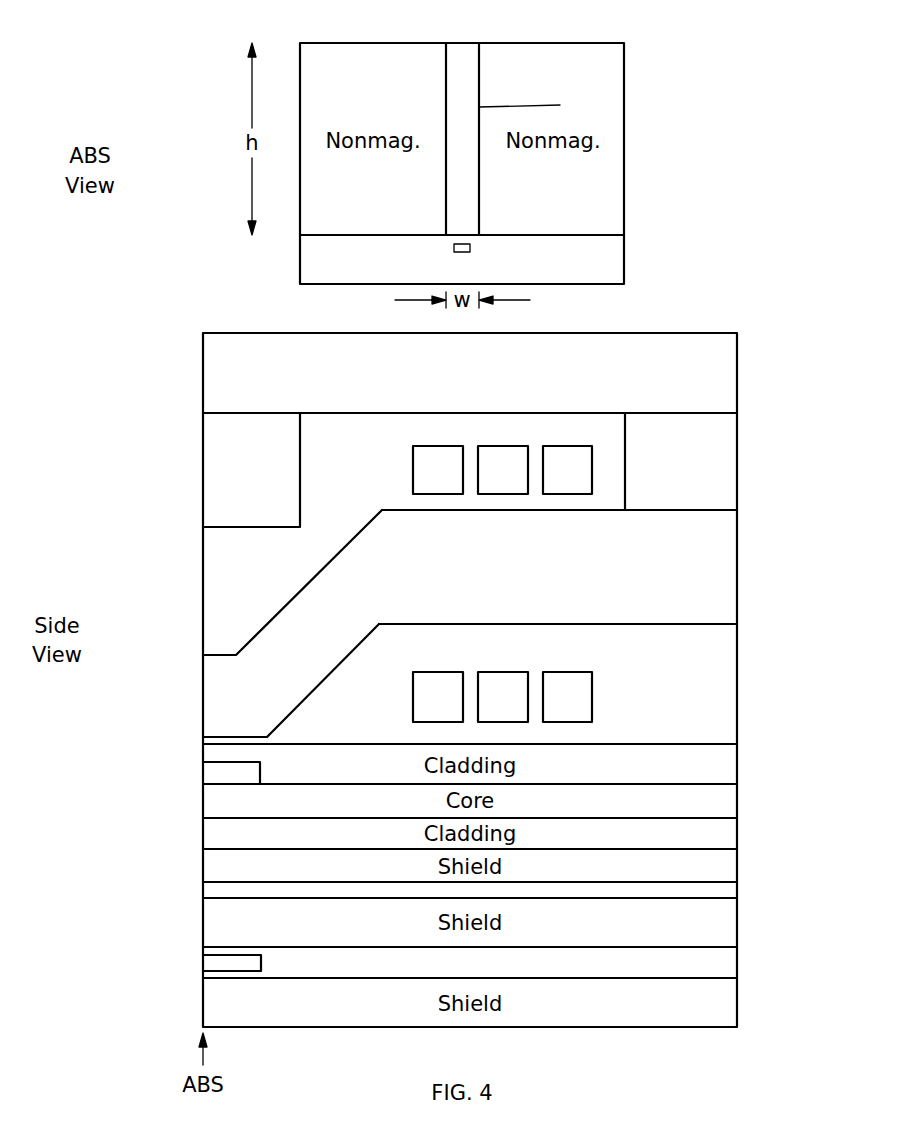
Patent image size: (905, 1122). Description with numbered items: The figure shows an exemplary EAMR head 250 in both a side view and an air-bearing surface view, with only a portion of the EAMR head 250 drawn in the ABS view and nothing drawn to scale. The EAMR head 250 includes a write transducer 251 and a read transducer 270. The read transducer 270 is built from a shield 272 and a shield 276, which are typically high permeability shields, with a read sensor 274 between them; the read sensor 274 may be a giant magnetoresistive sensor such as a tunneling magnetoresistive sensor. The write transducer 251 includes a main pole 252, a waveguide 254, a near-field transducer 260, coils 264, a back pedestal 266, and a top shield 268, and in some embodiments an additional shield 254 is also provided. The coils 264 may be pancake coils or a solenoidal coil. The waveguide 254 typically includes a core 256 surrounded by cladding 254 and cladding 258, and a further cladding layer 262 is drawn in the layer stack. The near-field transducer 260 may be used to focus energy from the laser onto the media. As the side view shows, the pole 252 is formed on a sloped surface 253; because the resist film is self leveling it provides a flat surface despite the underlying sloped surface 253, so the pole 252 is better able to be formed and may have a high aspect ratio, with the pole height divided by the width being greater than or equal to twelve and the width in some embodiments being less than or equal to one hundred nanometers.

The EAMR head 250 is at (387, 149).
The write transducer 251 is at (826, 590).
The main pole 252 is at (560, 105).
The sloped surface 253 is at (313, 655).
The waveguide / cladding 254 is at (737, 865).
The core 256 is at (203, 833).
The cladding 258 is at (737, 808).
The near-field transducer 260 is at (470, 250).
The cladding layer 262 is at (737, 760).
The coil(s) 264 is at (622, 474).
The back pedestal 266 is at (737, 443).
The top shield 268 is at (737, 365).
The read transducer 270 is at (752, 897).
The shield 272 is at (203, 1000).
The read sensor 274 is at (240, 971).
The shield 276 is at (623, 947).